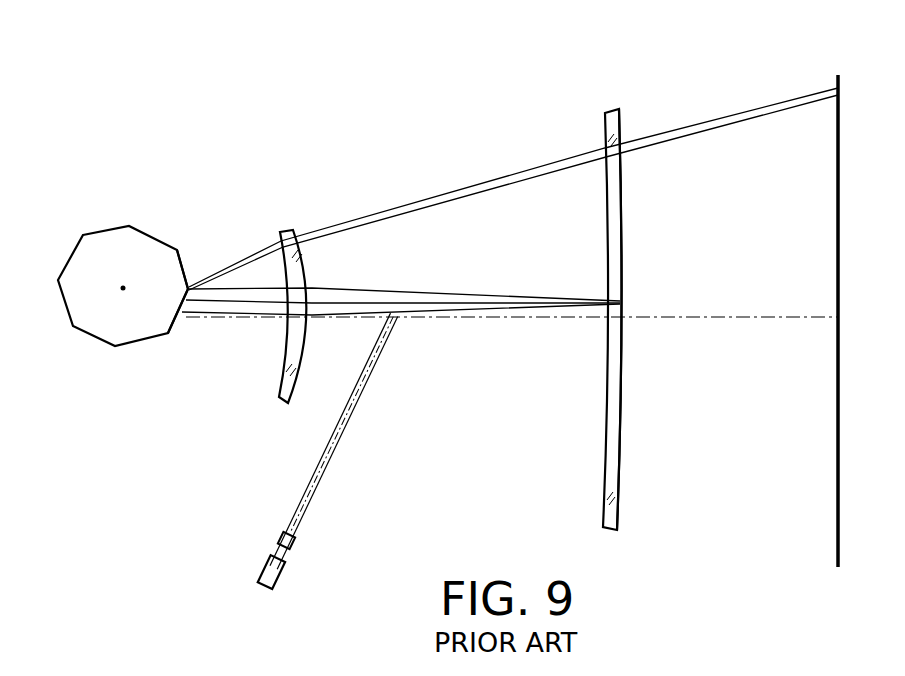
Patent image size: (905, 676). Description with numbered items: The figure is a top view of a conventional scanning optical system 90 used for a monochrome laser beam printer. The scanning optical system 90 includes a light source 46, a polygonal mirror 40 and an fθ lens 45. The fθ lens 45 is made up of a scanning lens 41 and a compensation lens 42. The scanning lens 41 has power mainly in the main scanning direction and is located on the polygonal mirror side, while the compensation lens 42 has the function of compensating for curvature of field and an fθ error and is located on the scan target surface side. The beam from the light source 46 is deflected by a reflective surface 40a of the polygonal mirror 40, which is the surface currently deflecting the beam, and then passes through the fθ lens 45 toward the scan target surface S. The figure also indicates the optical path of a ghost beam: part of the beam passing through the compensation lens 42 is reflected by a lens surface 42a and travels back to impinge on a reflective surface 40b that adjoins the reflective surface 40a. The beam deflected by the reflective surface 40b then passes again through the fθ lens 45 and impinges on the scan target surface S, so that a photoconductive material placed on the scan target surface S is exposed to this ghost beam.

The scanning optical system 90 is at (158, 104).
The polygonal mirror 40 is at (85, 323).
The reflective surface 40a is at (172, 335).
The reflective surface 40b is at (182, 263).
The scanning lens 41 is at (293, 232).
The compensation lens 42 is at (603, 126).
The lens surface 42a is at (658, 105).
The fθ lens 45 is at (675, 63).
The light source 46 is at (297, 573).
The scan target surface S is at (835, 503).